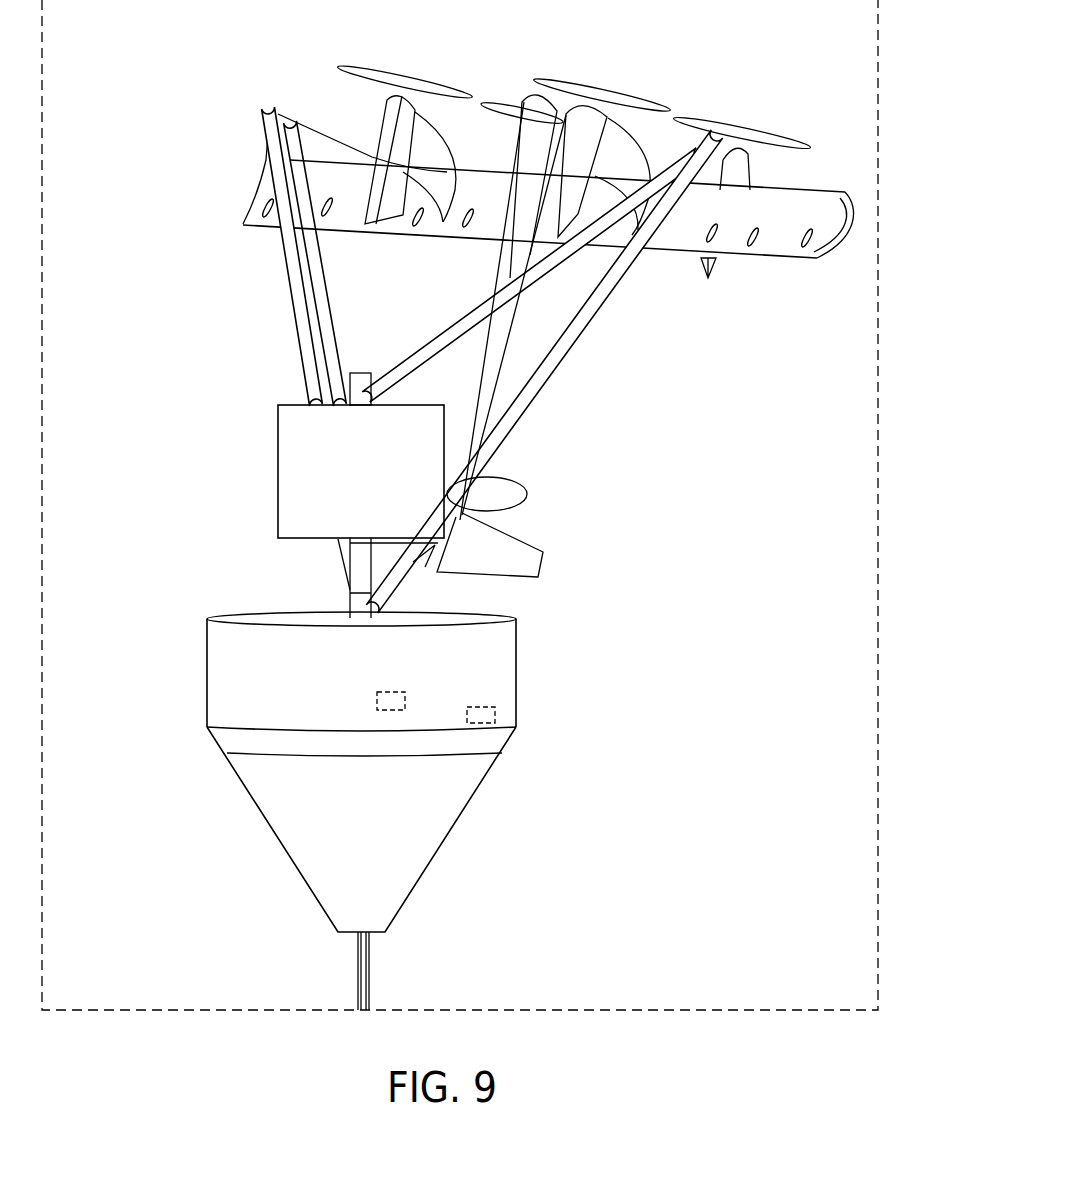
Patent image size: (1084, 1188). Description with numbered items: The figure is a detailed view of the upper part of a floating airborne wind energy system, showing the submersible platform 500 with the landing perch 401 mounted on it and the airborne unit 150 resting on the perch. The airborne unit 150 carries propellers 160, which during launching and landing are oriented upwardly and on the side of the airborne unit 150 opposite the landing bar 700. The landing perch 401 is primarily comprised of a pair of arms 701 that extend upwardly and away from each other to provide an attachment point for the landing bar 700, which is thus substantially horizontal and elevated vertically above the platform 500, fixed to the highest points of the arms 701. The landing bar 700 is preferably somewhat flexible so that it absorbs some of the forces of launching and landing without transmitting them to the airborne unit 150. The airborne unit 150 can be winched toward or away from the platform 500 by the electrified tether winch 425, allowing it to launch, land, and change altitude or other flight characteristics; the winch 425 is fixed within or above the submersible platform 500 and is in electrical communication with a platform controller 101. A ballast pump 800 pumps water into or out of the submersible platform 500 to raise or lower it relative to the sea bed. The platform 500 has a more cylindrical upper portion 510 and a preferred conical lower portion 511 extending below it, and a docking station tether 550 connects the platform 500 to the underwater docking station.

The platform controller 101 is at (376, 700).
The airborne unit 150 is at (850, 181).
The propellers 160 is at (410, 75).
The landing perch 401 is at (176, 355).
The electrified tether winch 425 is at (300, 486).
The submersible platform 500 is at (355, 811).
The upper portion 510 is at (518, 668).
The lower portion 511 is at (393, 842).
The docking station tether 550 is at (368, 972).
The landing bar 700 is at (297, 133).
The arms 701 is at (274, 247).
The ballast pump 800 is at (492, 718).